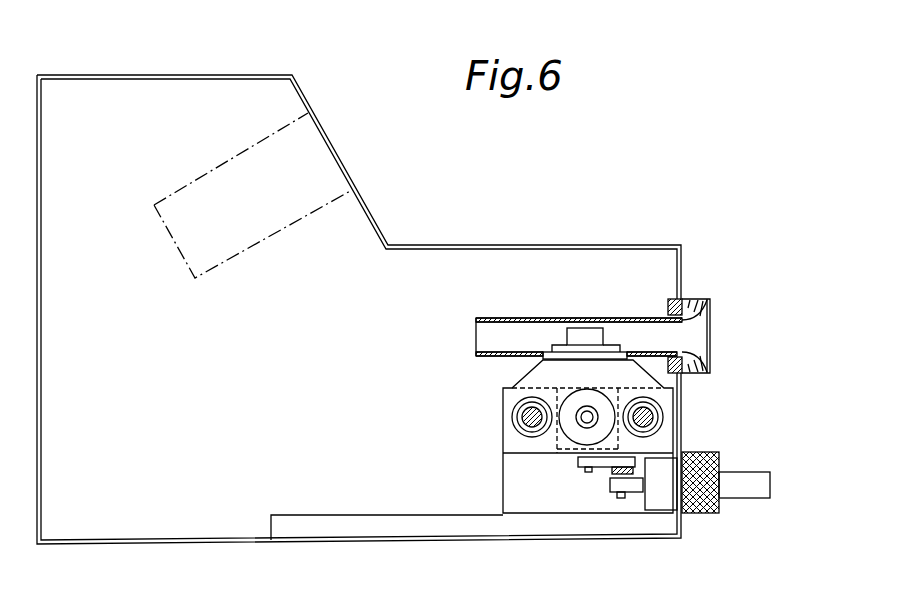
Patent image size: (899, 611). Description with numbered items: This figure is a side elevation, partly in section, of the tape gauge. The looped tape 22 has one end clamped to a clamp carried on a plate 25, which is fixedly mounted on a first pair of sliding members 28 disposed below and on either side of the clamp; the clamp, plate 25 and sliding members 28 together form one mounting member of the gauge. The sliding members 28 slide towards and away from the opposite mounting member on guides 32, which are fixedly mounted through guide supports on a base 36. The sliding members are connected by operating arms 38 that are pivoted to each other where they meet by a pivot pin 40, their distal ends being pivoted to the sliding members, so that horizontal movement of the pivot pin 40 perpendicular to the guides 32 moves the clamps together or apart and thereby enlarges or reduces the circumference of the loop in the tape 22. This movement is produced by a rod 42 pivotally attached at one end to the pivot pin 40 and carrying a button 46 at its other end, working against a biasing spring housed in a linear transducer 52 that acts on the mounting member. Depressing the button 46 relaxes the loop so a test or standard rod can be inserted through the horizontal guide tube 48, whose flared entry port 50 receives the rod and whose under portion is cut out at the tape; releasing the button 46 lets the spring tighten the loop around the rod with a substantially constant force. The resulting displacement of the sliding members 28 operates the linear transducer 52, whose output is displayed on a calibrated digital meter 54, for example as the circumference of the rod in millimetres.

The looped tape 22 is at (585, 335).
The plate 25 is at (545, 372).
The first pair of sliding members 28 is at (518, 418).
The guides 32 is at (532, 422).
The base 36 is at (305, 527).
The operating arms 38 is at (603, 462).
The pivot pin 40 is at (622, 500).
The rod 42 is at (612, 490).
The button 46 is at (757, 482).
The guide tube 48 is at (511, 310).
The flared entry port 50 is at (710, 332).
The linear transducer 52 is at (595, 405).
The digital meter 54 is at (331, 170).